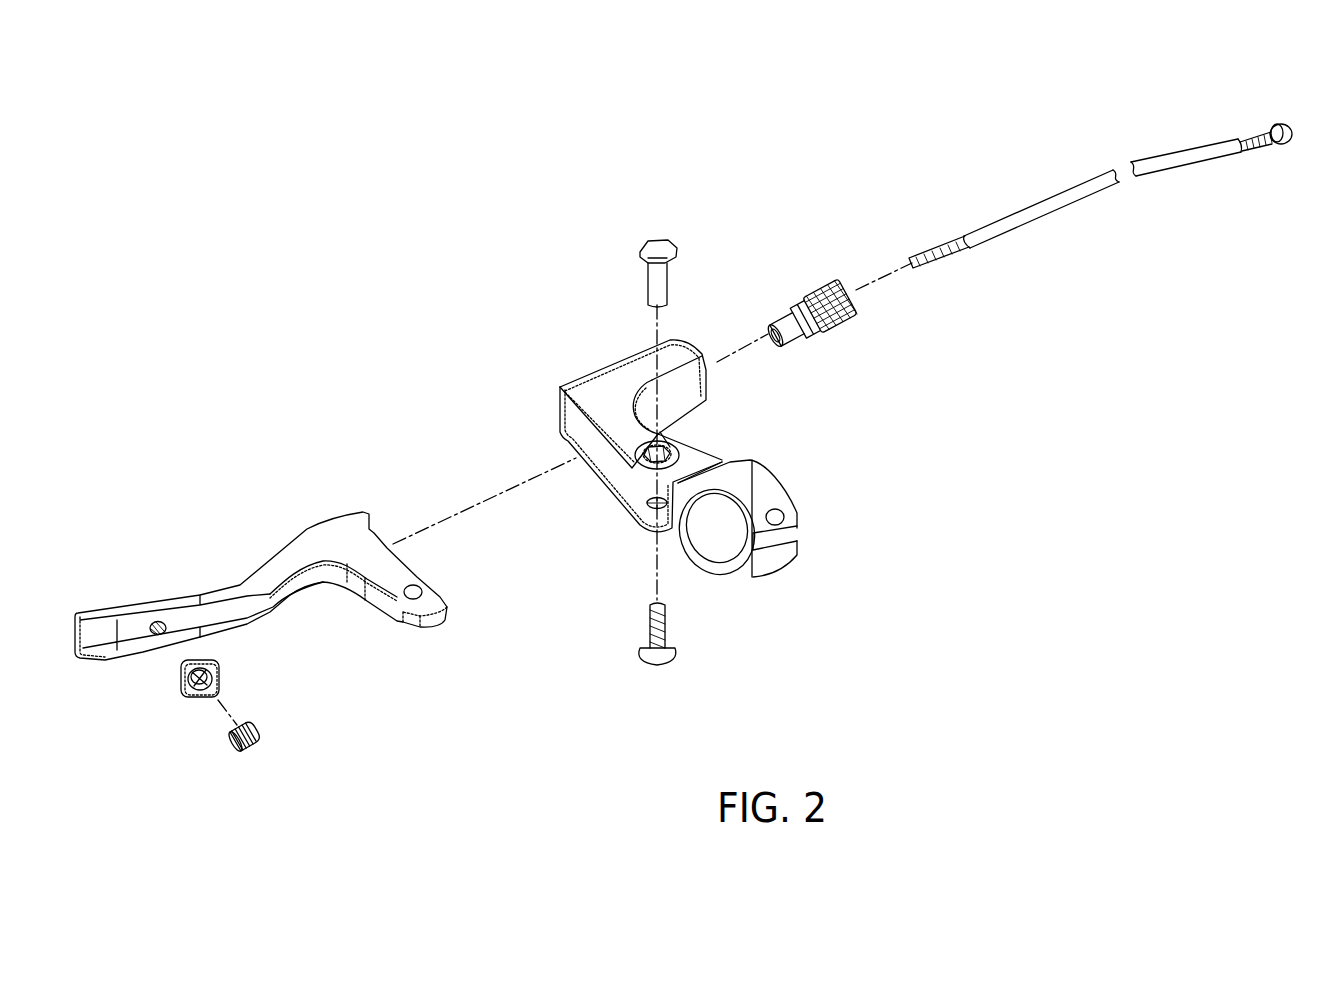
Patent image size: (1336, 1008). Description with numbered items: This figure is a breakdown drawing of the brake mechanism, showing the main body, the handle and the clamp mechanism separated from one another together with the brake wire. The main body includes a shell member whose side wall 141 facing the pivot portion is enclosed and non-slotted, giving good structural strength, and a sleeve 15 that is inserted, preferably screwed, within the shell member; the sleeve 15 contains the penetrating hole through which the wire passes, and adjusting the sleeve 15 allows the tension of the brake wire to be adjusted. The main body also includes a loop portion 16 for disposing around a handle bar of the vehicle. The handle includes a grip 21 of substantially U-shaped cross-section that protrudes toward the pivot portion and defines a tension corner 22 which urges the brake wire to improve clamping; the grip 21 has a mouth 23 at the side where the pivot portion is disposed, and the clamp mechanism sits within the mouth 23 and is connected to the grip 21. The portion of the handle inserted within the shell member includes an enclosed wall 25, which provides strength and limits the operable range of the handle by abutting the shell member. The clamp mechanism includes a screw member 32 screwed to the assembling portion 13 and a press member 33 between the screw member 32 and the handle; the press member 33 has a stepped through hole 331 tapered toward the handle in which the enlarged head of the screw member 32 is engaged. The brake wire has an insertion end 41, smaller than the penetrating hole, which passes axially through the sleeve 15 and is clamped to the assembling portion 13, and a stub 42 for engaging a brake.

The assembling portion 13 is at (157, 634).
The sleeve 15 is at (813, 287).
The loop portion 16 is at (747, 480).
The grip 21 is at (161, 596).
The tension corner 22 is at (262, 602).
The mouth 23 is at (298, 600).
The enclosed wall 25 is at (387, 630).
The screw member 32 is at (245, 750).
The press member 33 is at (182, 693).
The stepped through hole 331 is at (200, 700).
The insertion end 41 is at (942, 255).
The stub 42 is at (1292, 147).
The side wall 141 is at (566, 448).